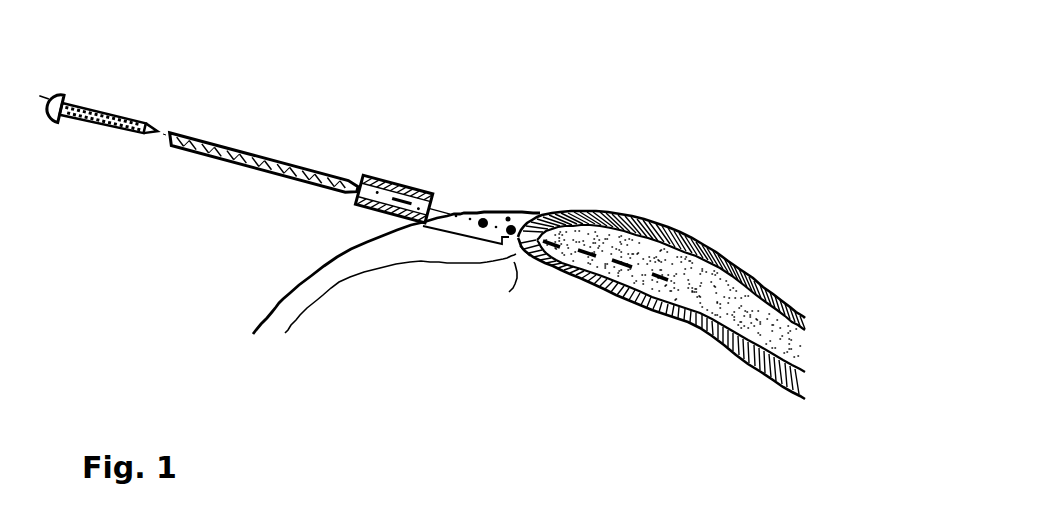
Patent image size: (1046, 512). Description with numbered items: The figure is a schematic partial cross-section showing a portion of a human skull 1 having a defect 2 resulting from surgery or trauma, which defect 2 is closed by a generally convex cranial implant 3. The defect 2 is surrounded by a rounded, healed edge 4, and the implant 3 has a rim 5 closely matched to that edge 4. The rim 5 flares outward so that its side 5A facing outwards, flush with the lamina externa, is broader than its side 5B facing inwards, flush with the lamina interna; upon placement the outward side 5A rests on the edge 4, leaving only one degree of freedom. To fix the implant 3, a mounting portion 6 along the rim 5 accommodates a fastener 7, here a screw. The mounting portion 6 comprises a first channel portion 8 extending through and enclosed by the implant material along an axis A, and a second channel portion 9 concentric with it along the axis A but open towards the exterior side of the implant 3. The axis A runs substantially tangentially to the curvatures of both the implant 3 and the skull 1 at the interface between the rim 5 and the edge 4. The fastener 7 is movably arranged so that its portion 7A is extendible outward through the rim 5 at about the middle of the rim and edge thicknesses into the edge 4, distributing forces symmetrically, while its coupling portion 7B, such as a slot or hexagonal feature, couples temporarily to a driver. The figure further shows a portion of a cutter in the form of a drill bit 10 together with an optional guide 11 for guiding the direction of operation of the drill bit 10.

The skull 1 is at (637, 218).
The defect 2 is at (278, 405).
The cranial implant 3 is at (283, 292).
The edge 4 is at (527, 260).
The rim 5 is at (475, 265).
The outward-facing side of the rim 5A is at (510, 221).
The inward-facing side of the rim 5B is at (508, 243).
The mounting portion 6 is at (463, 208).
The fastener 7 is at (122, 108).
The extendible portion of the fastener 7A is at (148, 123).
The coupling portion 7B is at (65, 98).
The first channel portion 8 is at (512, 226).
The second channel portion 9 is at (484, 219).
The drill bit 10 is at (258, 156).
The guide 11 is at (393, 178).
The axis A is at (167, 133).